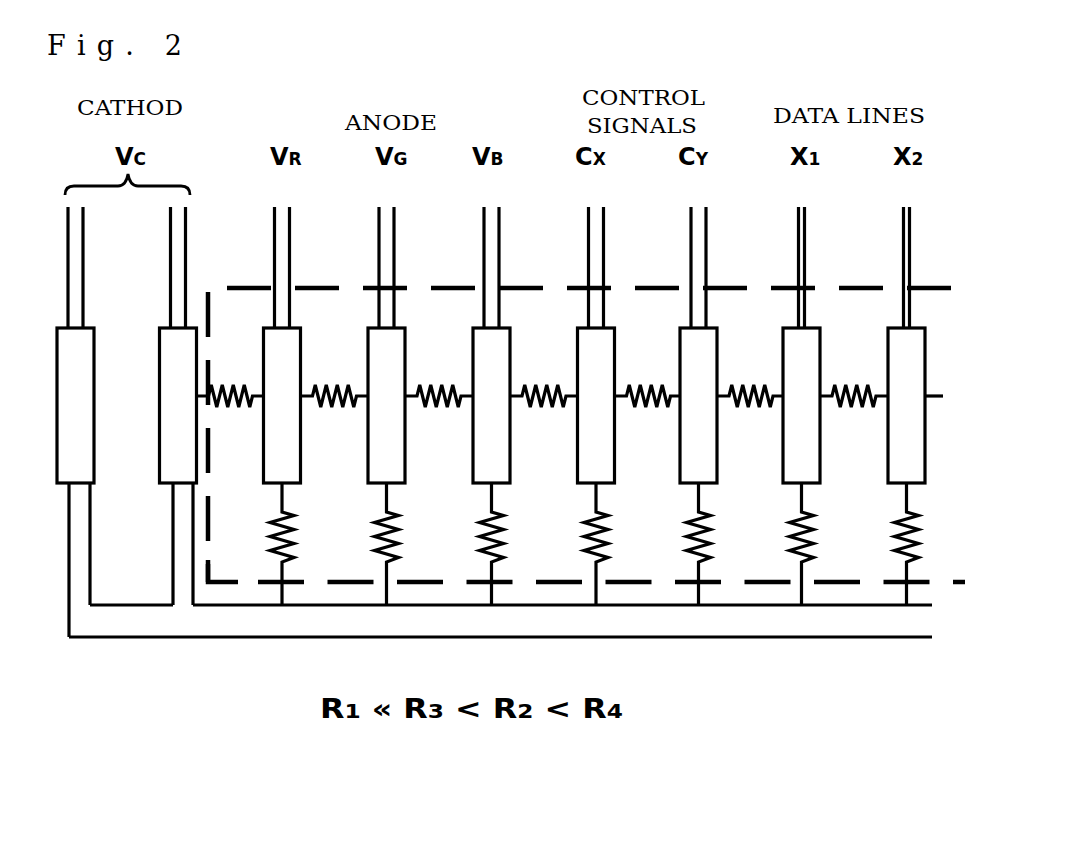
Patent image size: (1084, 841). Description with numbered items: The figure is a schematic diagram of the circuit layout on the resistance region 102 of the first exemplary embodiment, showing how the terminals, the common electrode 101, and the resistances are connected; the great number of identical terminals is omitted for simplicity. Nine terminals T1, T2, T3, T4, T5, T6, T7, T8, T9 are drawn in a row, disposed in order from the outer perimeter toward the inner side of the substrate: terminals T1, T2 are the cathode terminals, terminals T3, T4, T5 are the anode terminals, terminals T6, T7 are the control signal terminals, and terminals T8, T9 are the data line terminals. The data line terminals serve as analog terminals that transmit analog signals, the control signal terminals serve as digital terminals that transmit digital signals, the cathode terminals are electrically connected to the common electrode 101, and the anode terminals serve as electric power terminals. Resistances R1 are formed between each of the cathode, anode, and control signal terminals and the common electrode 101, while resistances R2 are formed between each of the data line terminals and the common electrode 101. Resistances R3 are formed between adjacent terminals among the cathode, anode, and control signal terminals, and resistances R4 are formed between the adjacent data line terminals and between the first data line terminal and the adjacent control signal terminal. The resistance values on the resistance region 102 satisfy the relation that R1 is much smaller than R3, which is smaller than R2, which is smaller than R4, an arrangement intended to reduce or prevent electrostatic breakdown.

The common electrode 101 is at (698, 637).
The resistance region 102 is at (837, 605).
The terminal T1 is at (75, 422).
The terminal T2 is at (178, 406).
The terminal T3 (anode VR) T3 is at (282, 345).
The terminal T4 (anode VG) T4 is at (386, 345).
The terminal T5 (anode VB) T5 is at (491, 345).
The terminal T6 (control signal CX) T6 is at (596, 345).
The terminal T7 (control signal CY) T7 is at (698, 345).
The terminal T8 (data line X1) T8 is at (801, 345).
The terminal T9 (data line X2) T9 is at (915, 345).
The resistance R1 is at (507, 544).
The resistance R2 is at (871, 544).
The resistance R3 is at (439, 383).
The resistance R4 is at (802, 383).